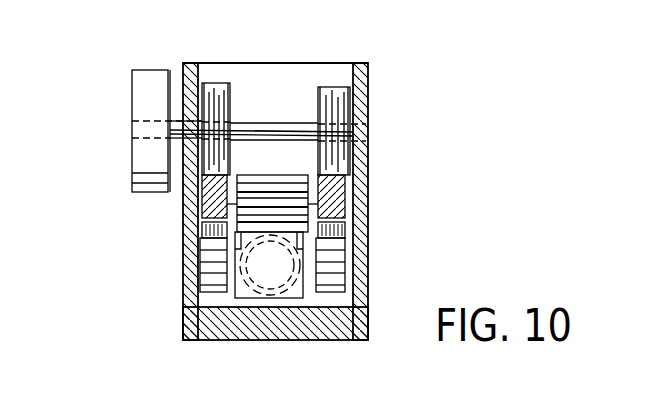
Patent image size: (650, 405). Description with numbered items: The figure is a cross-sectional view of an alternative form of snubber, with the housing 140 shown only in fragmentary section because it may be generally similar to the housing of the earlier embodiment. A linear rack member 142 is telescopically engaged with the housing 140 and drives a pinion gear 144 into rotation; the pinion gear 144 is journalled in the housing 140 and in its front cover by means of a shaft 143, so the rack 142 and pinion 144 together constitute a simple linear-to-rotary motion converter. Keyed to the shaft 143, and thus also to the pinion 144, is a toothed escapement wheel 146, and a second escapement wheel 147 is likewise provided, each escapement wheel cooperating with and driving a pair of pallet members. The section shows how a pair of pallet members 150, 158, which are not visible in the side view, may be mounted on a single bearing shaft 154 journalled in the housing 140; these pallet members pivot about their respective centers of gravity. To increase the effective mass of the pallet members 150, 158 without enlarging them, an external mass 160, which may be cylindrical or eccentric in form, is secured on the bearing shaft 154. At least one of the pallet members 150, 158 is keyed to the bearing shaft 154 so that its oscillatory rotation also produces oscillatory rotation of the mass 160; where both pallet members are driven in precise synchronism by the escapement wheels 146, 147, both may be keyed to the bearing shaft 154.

The housing 140 is at (362, 312).
The linear rack member 142 is at (268, 285).
The shaft 143 is at (222, 200).
The pinion gear 144 is at (250, 181).
The escapement wheel 146 is at (212, 250).
The escapement wheel 147 is at (338, 262).
The pallet member 150 is at (215, 93).
The bearing shaft 154 is at (289, 127).
The pallet member 158 is at (345, 105).
The external mass 160 is at (140, 88).